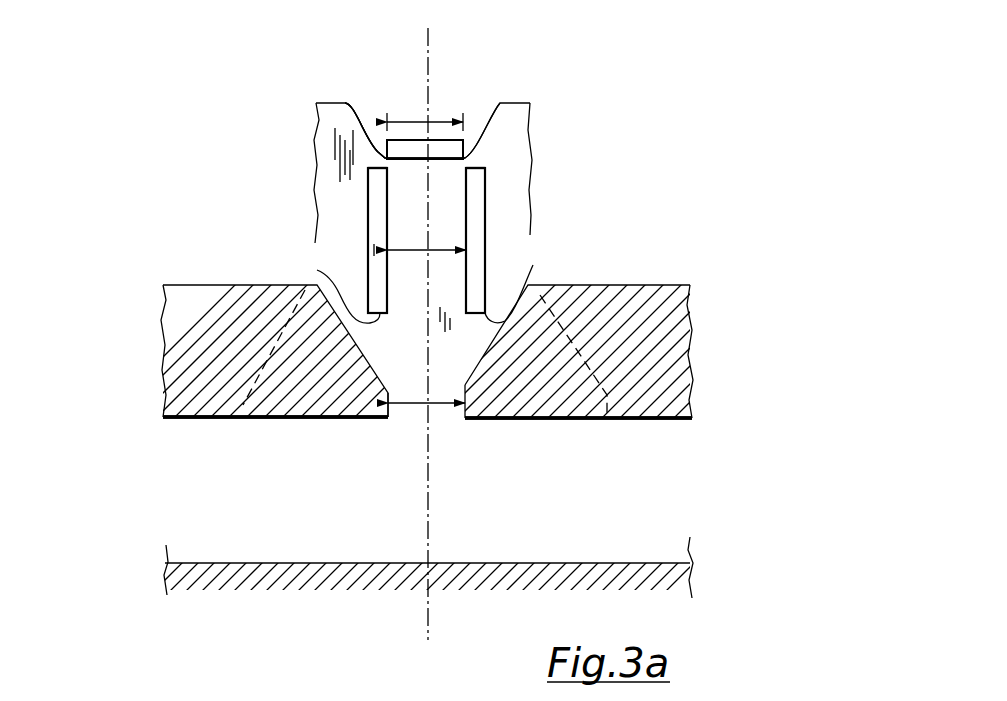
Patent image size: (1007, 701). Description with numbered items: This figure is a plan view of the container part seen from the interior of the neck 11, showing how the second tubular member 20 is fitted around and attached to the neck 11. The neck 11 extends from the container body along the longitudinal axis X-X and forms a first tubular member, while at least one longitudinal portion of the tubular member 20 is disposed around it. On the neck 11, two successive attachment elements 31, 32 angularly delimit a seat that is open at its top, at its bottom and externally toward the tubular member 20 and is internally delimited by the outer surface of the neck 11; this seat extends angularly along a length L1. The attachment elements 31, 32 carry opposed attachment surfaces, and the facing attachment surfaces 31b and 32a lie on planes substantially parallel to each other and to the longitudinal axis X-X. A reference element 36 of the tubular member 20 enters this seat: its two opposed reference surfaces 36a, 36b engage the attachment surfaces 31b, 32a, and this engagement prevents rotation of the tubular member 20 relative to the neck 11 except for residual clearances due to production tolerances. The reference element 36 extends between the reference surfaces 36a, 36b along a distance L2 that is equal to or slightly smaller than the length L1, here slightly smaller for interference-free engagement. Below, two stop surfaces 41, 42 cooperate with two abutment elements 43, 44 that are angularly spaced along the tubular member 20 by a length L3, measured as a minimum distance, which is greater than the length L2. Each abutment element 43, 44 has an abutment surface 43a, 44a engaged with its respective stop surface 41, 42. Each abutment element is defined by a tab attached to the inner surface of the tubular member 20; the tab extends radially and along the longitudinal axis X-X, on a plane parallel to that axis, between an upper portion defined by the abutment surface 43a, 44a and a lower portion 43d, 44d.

The neck 11 is at (178, 493).
The second tubular member 20 is at (312, 136).
The attachment element 31 is at (266, 351).
The attachment surface 31b is at (388, 417).
The attachment element 32 is at (578, 345).
The attachment surface 32a is at (463, 415).
The reference element 36 is at (488, 142).
The reference surface 36a is at (383, 150).
The reference surface 36b is at (440, 148).
The stop surface 41 is at (293, 417).
The stop surface 42 is at (543, 422).
The abutment element 43 is at (366, 222).
The abutment surface 43a is at (375, 166).
The lower portion 43d is at (318, 270).
The abutment element 44 is at (489, 217).
The abutment surface 44a is at (483, 165).
The lower portion 44d is at (533, 265).
The angular length of the seat L1 is at (414, 400).
The angular distance between reference surfaces L2 is at (408, 120).
The angular spacing of abutment elements L3 is at (378, 250).
The longitudinal axis X-X is at (428, 73).